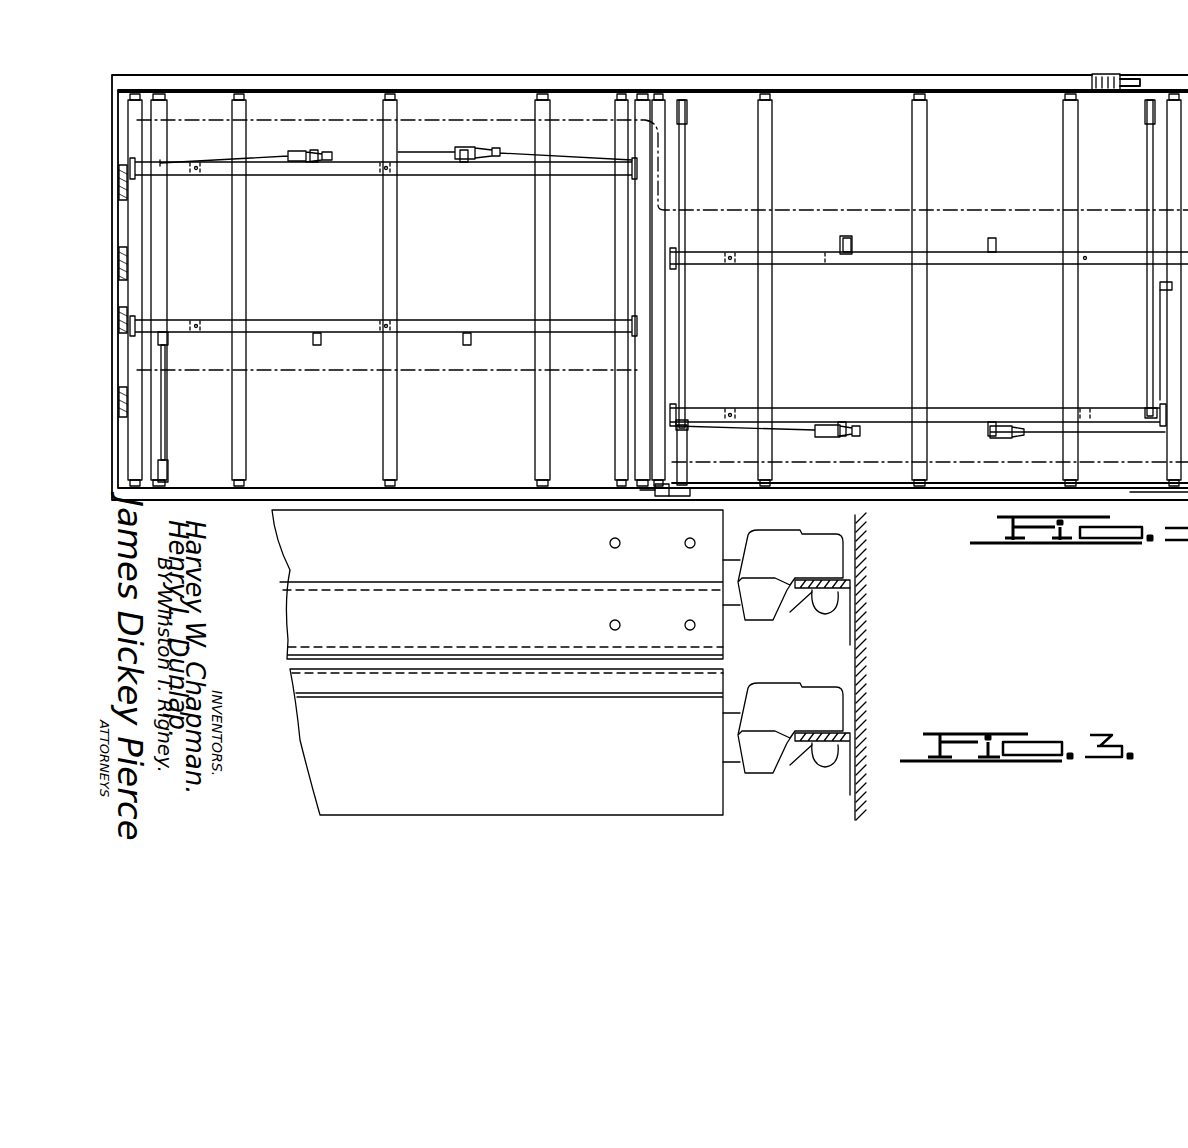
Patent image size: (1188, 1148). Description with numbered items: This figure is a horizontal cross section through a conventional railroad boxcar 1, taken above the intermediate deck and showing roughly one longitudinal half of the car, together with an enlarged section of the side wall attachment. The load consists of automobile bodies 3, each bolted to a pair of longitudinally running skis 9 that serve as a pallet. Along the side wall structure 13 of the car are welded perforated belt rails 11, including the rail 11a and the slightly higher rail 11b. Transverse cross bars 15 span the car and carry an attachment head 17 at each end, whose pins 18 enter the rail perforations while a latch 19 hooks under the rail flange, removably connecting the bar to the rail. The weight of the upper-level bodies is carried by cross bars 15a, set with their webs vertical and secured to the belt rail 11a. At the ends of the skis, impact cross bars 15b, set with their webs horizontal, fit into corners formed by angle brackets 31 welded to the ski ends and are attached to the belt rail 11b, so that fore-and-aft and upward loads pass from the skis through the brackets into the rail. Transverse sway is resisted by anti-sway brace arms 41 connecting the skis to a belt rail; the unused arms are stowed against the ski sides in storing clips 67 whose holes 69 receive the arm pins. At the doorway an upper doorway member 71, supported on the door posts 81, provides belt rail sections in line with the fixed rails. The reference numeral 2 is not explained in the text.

In FIG. 2, the railroad boxcar 1 is at (966, 69).
In FIG. 2, the room 2 is at (1172, 72).
In FIG. 2, the automobile body 3 is at (605, 376).
In FIG. 2, the ski 9 is at (858, 406).
In FIG. 2, the belt rail 11 is at (480, 90).
In FIG. 3, the belt rail 11a is at (858, 740).
In FIG. 2, the belt rail 11b is at (1090, 482).
In FIG. 3, the belt rail 11b is at (860, 600).
In FIG. 3, the side wall structure 13 is at (856, 560).
In FIG. 2, the cross bar 15 is at (936, 161).
In FIG. 2, the cross bar 15a is at (1078, 125).
In FIG. 3, the cross bar 15a is at (560, 732).
In FIG. 2, the cross bar 15b is at (1168, 318).
In FIG. 3, the cross bar 15b is at (540, 522).
In FIG. 2, the attachment head 17 is at (790, 496).
In FIG. 3, the attachment head 17 is at (808, 696).
In FIG. 2, the pin 18 is at (118, 262).
In FIG. 3, the pin 18 is at (828, 766).
In FIG. 3, the latch 19 is at (798, 768).
In FIG. 2, the angle bracket 31 is at (1158, 400).
In FIG. 2, the anti-sway brace arm 41 is at (1016, 427).
In FIG. 2, the storing clip 67 is at (988, 432).
In FIG. 2, the hole 69 is at (840, 246).
In FIG. 2, the upper doorway member 71 is at (1135, 496).
In FIG. 2, the door post 81 is at (660, 490).